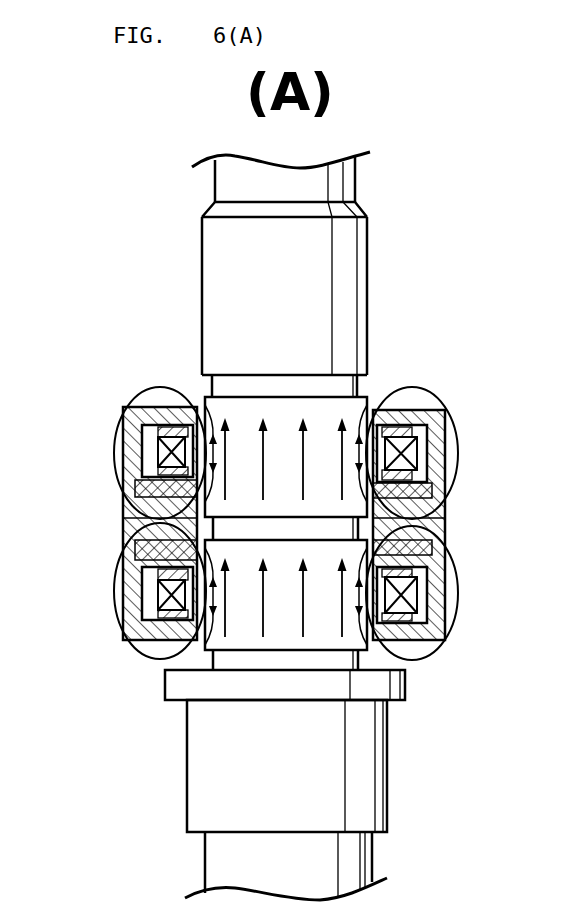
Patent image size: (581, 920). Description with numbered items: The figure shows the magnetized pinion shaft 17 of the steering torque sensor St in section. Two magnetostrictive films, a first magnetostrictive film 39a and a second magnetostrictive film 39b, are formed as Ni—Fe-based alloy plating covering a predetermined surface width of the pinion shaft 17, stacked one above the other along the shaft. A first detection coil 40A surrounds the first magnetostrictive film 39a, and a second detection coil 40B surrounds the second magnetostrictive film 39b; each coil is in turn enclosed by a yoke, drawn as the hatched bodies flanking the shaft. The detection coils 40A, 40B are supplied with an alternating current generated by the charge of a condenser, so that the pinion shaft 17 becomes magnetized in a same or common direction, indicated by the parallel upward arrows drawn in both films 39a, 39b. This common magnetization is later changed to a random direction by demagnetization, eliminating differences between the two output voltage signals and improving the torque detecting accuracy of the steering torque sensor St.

The pinion shaft 17 is at (372, 216).
The first magnetostrictive film 39a is at (282, 413).
The second magnetostrictive film 39b is at (248, 632).
The first detection coil 40A is at (150, 448).
The second detection coil 40B is at (150, 597).
The steering torque sensor St is at (437, 358).